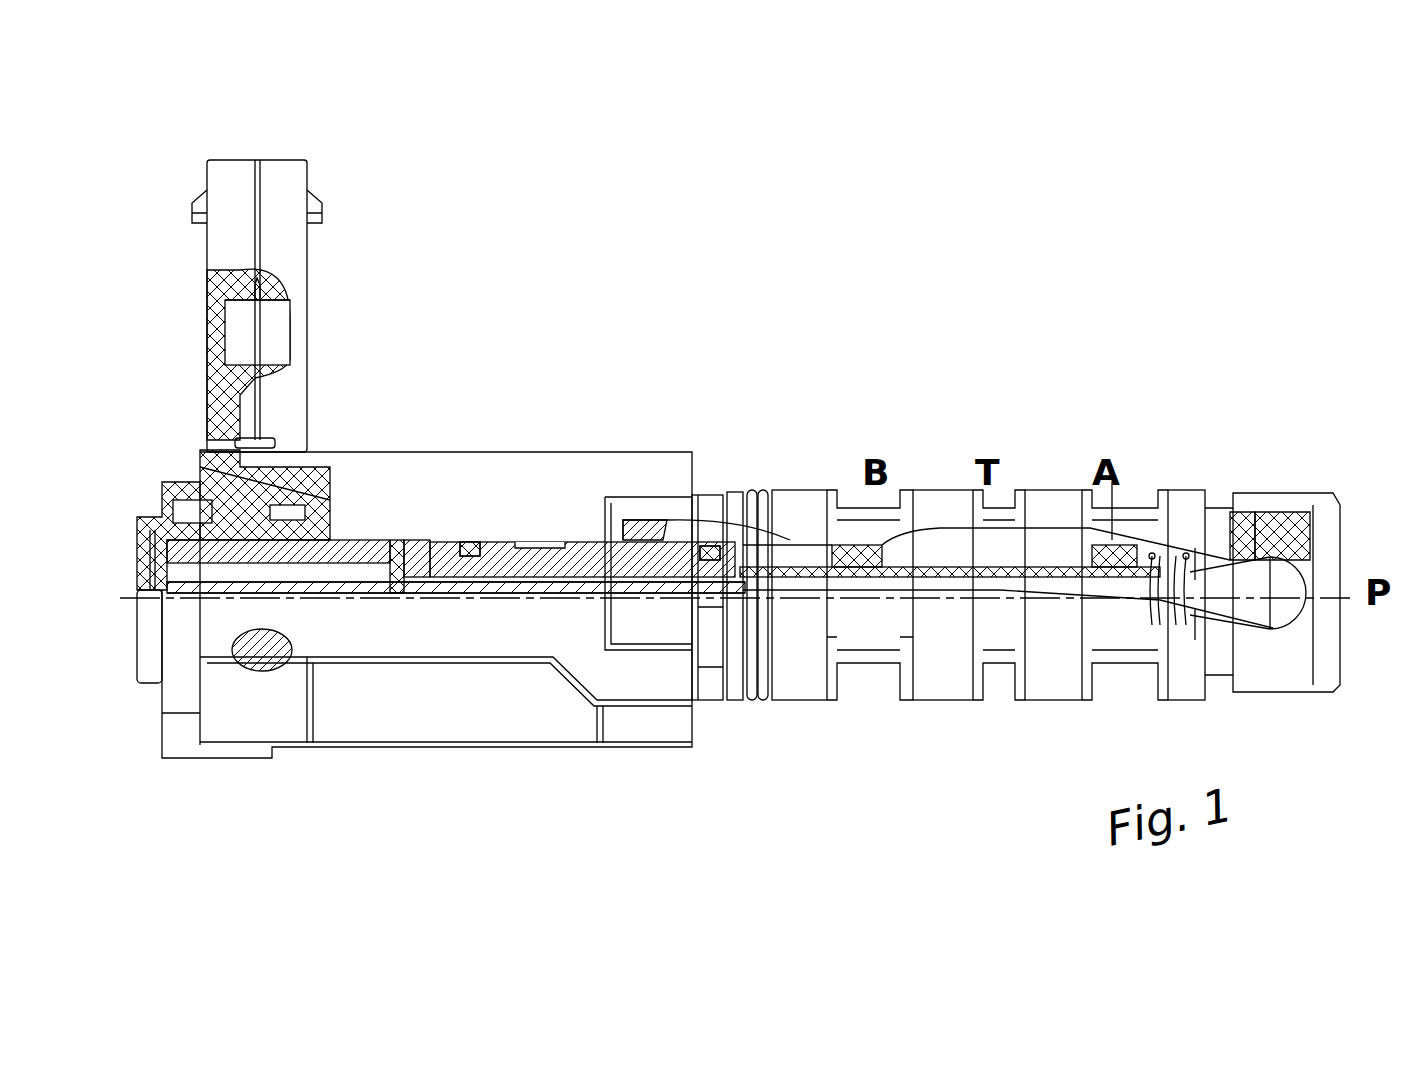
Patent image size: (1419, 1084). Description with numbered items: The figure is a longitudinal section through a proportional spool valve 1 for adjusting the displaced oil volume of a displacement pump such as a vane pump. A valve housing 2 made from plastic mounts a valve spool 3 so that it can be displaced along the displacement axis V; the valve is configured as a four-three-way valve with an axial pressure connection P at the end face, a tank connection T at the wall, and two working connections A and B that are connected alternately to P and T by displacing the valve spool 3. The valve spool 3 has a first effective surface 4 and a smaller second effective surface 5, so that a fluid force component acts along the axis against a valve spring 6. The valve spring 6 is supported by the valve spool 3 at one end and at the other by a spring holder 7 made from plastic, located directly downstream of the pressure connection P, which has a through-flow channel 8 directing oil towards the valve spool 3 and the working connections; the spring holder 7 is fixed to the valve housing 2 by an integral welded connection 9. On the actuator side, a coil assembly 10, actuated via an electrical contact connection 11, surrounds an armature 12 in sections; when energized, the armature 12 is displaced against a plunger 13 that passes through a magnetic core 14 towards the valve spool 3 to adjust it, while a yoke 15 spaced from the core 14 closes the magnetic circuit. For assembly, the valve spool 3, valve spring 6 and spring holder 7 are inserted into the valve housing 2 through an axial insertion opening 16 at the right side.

The proportional spool valve 1 is at (872, 717).
The valve housing 2 is at (937, 503).
The valve spool 3 is at (1107, 542).
The first effective surface 4 is at (832, 555).
The second effective surface 5 is at (1137, 558).
The valve spring 6 is at (1187, 557).
The spring holder 7 is at (1273, 543).
The through-flow channel 8 is at (1282, 617).
The integral welded connection 9 is at (1258, 530).
The coil assembly 10 is at (282, 512).
The electrical contact connection 11 is at (255, 318).
The armature 12 is at (257, 652).
The plunger 13 is at (397, 588).
The magnetic core 14 is at (535, 563).
The yoke 15 is at (233, 470).
The insertion opening 16 is at (1338, 618).